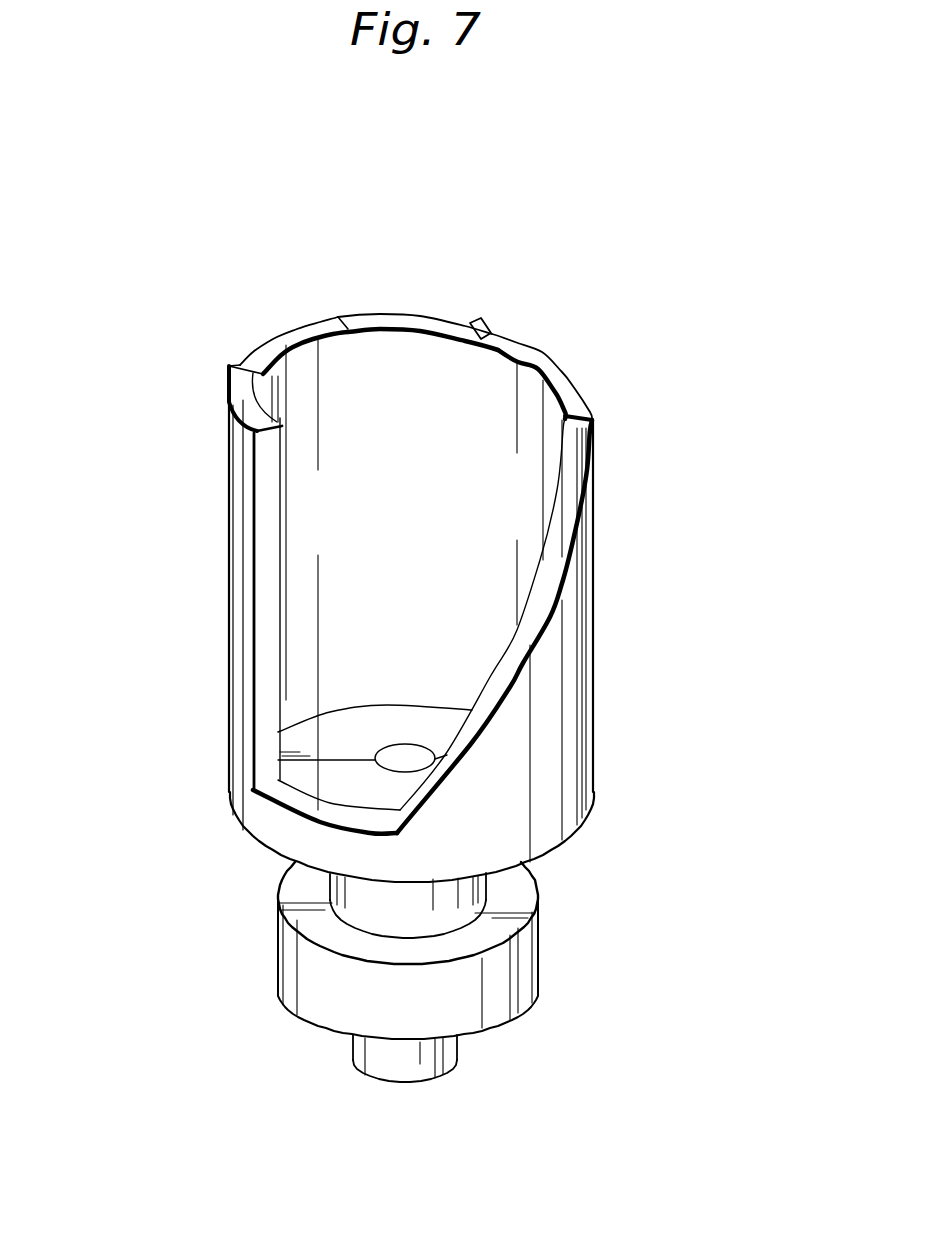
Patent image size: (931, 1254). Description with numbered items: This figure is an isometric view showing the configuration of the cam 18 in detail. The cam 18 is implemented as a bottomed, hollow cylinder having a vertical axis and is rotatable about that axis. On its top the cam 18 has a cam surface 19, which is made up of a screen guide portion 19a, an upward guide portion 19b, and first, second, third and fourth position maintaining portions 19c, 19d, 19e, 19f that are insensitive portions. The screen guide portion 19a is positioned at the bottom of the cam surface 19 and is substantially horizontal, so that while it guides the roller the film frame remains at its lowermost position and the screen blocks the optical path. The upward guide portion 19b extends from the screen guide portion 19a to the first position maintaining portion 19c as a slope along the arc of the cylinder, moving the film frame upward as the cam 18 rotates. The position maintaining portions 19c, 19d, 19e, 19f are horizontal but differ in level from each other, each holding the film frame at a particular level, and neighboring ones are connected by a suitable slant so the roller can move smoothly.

The cam 18 is at (573, 672).
The cam surface 19 is at (563, 530).
The screen guide portion 19a is at (300, 803).
The upward guide portion 19b is at (505, 697).
The first position maintaining portion 19c is at (540, 362).
The second position maintaining portion 19d is at (397, 322).
The third position maintaining portion 19e is at (283, 343).
The fourth position maintaining portion 19f is at (243, 403).